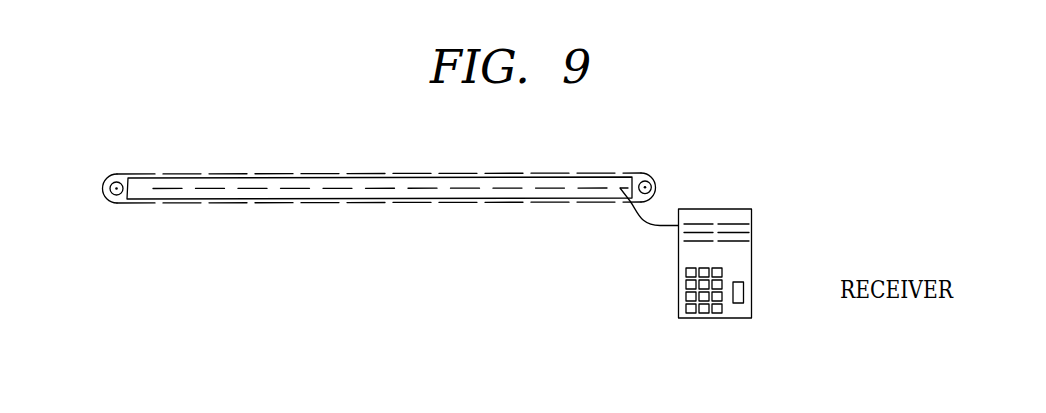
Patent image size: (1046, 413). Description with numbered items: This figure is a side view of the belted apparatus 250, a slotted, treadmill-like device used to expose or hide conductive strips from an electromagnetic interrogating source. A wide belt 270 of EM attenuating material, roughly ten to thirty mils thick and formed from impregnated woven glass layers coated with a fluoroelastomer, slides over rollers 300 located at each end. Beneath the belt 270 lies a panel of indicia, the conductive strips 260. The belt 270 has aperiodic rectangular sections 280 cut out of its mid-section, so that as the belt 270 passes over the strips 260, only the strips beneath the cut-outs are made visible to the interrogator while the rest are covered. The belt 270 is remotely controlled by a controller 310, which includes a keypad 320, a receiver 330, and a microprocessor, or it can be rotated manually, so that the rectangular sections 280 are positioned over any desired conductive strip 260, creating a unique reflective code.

The belted apparatus 250 is at (86, 157).
The conductive strips 260 is at (462, 189).
The belt 270 is at (642, 174).
The rectangular sections 280 is at (290, 174).
The rollers 300 is at (115, 195).
The controller 310 is at (743, 255).
The keypad 320 is at (692, 308).
The receiver 330 is at (744, 293).